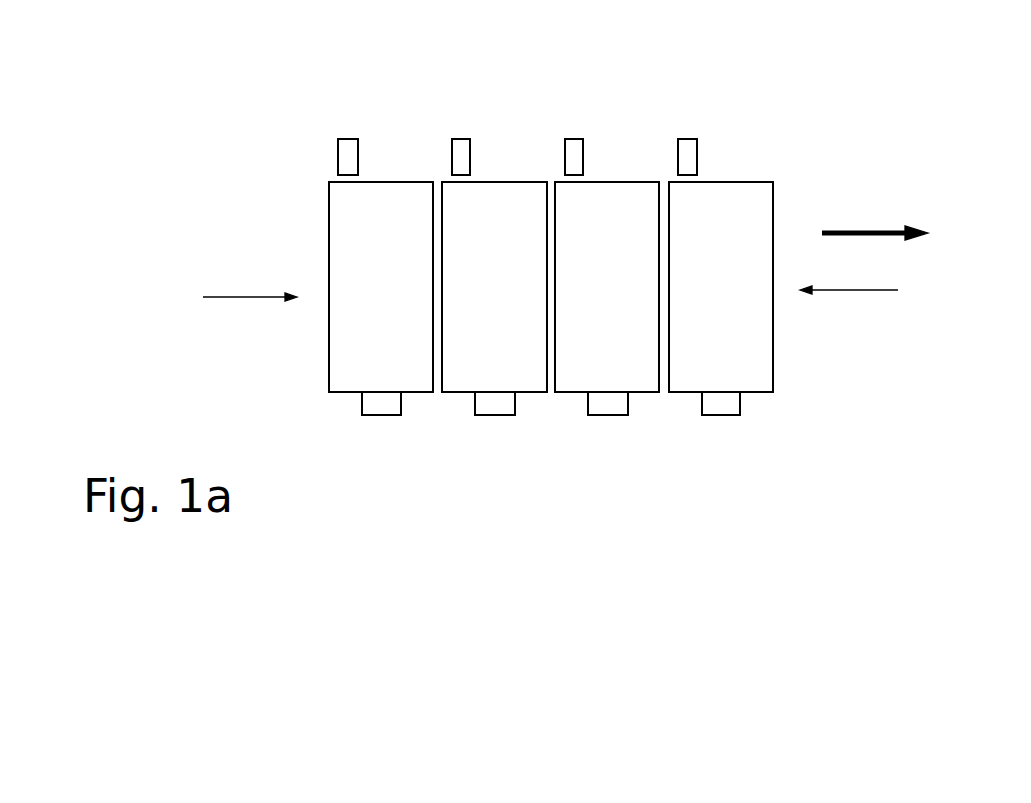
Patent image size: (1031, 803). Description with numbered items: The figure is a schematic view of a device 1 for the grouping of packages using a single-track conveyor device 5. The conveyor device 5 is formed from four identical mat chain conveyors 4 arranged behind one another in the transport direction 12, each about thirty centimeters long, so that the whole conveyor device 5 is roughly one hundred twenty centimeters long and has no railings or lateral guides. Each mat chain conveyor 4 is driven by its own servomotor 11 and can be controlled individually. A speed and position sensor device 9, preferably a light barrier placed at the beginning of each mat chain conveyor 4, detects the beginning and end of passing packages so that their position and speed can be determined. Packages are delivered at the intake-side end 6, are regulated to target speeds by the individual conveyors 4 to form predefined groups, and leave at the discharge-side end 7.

The device for grouping packages 1 is at (876, 139).
The mat chain conveyor 4 is at (500, 223).
The conveyor device 5 is at (554, 412).
The intake-side end 6 is at (235, 303).
The discharge-side end 7 is at (863, 293).
The speed and position sensor device 9 is at (345, 155).
The servomotor 11 is at (382, 407).
The transport direction 12 is at (868, 232).